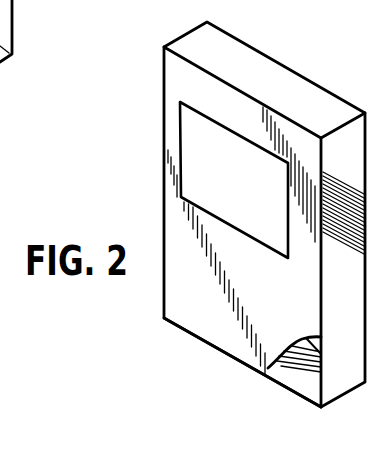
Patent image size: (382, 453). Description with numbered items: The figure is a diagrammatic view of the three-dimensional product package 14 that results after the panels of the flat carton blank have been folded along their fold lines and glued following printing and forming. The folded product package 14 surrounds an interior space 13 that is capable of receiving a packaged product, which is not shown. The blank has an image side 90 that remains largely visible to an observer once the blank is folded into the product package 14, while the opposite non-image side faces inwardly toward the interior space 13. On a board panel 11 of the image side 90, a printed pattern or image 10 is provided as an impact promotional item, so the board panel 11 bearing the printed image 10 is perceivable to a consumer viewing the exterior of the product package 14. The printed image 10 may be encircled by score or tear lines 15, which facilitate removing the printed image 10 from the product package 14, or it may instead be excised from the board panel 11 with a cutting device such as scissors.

The image panel 10 is at (228, 133).
The housing front face 11 is at (182, 81).
The bottom opening 13 is at (300, 378).
The top wall 14 is at (286, 42).
The side wall 15 is at (182, 127).
The bottom edge 90 is at (197, 318).